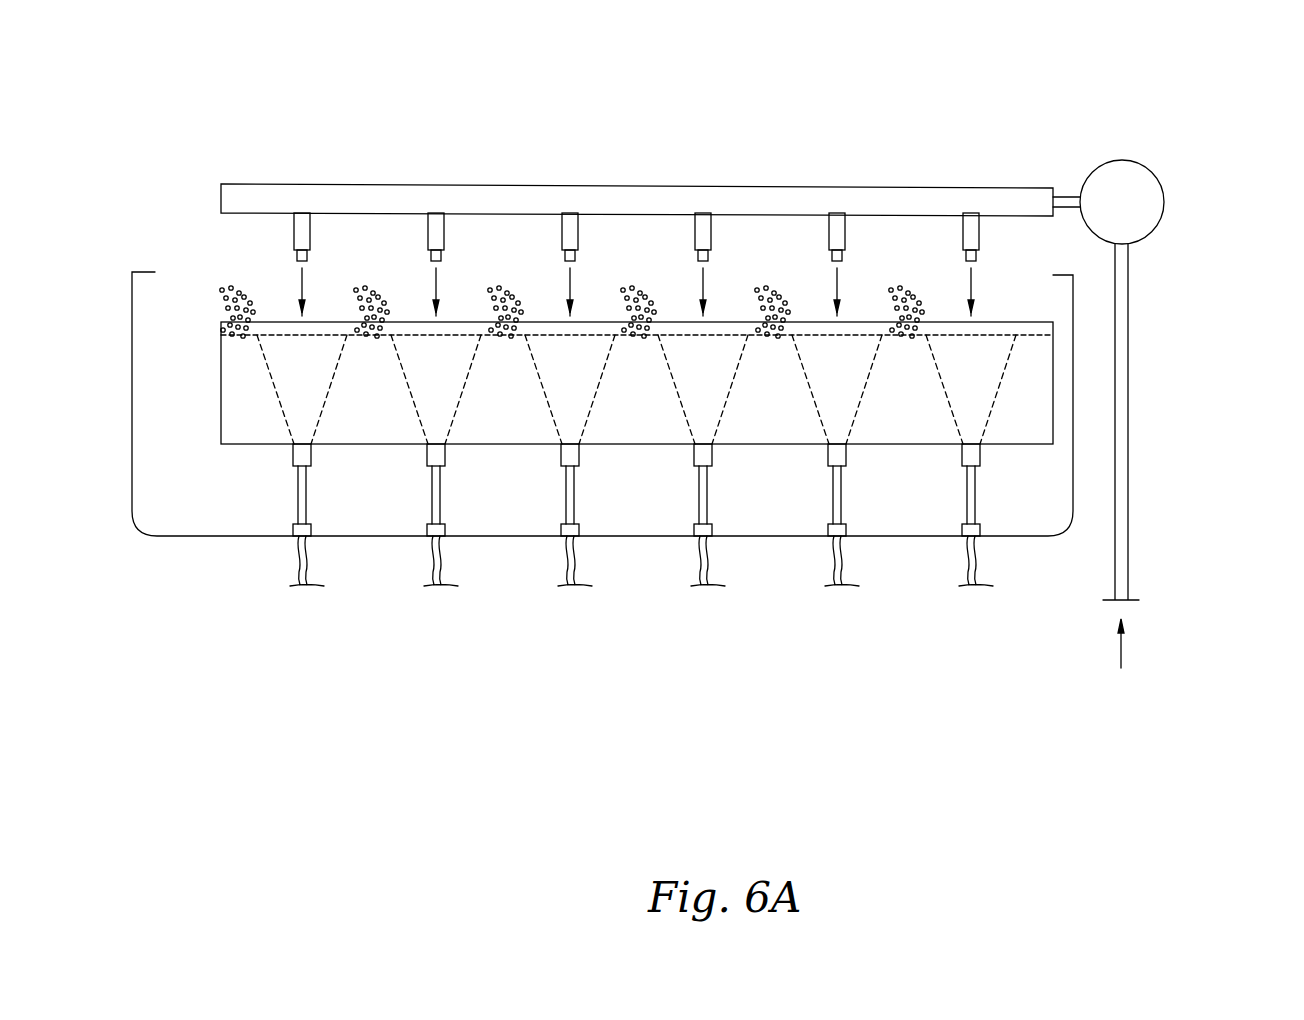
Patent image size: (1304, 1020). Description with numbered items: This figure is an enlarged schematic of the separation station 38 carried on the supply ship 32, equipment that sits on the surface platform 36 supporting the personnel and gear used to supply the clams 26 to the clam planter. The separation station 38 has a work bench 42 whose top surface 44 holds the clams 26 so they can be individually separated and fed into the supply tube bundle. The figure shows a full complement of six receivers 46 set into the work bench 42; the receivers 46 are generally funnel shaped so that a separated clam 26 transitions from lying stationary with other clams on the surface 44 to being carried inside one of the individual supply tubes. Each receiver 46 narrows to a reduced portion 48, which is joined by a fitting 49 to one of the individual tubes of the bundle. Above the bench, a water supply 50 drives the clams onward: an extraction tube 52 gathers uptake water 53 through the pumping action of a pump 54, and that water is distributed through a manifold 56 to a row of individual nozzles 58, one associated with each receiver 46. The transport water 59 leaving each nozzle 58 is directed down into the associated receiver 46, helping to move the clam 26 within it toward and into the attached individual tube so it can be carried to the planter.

The clams 26 is at (222, 290).
The supply ship 32 is at (193, 99).
The surface platform 36 is at (131, 360).
The separation station 38 is at (766, 99).
The work bench 42 is at (192, 373).
The top surface 44 is at (277, 322).
The receivers 46 is at (270, 376).
The reduced portion 48 is at (293, 456).
The fitting 49 is at (293, 529).
The water supply 50 is at (1212, 233).
The extraction tube 52 is at (1131, 405).
The uptake water 53 is at (1121, 652).
The pump 54 is at (1124, 160).
The manifold 56 is at (933, 186).
The individual nozzles 58 is at (293, 230).
The transport water 59 is at (305, 283).